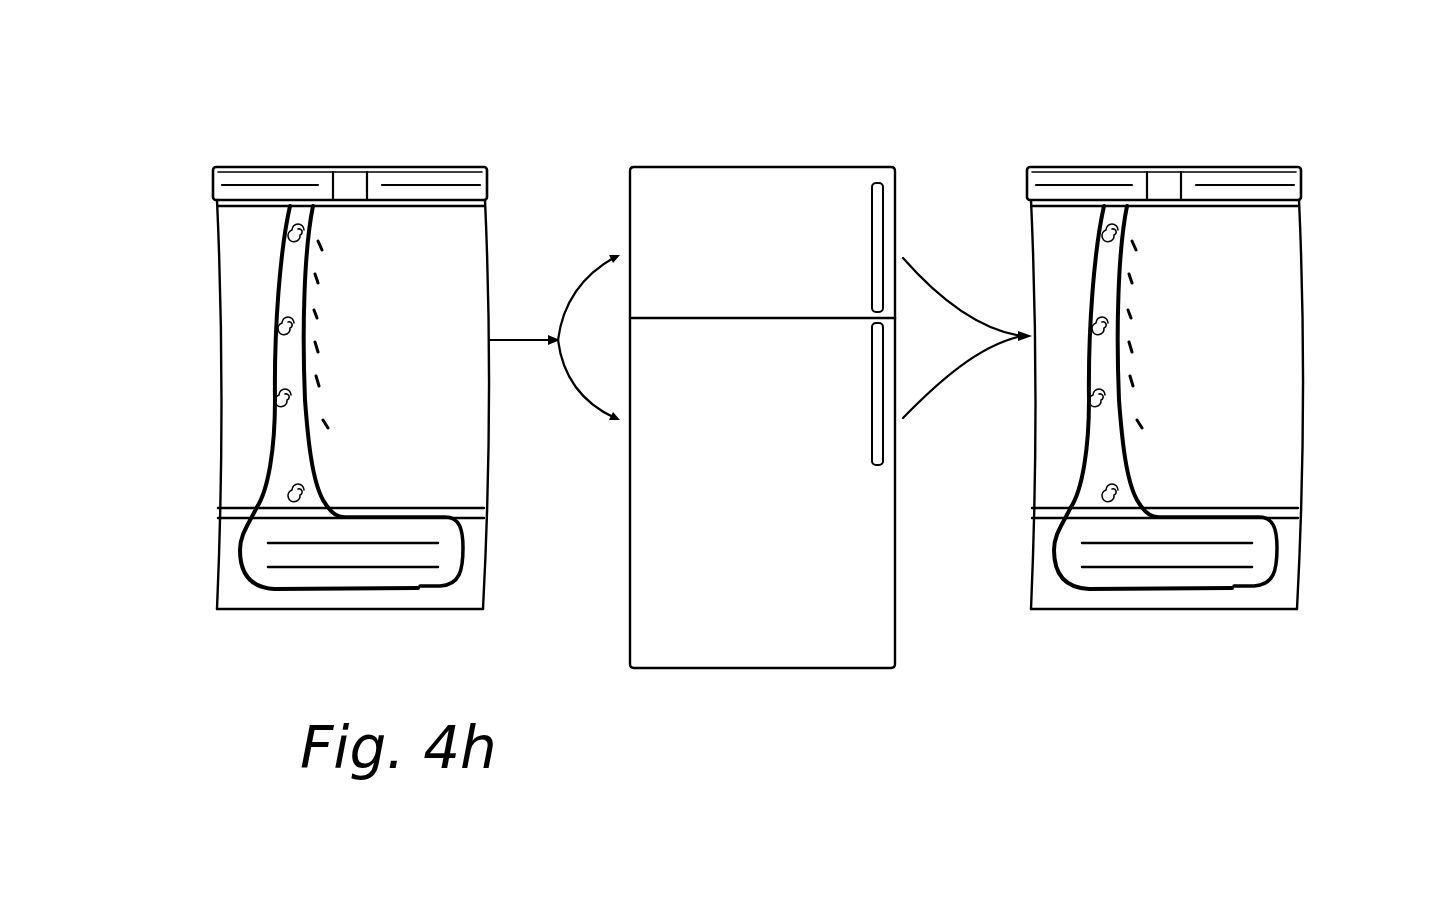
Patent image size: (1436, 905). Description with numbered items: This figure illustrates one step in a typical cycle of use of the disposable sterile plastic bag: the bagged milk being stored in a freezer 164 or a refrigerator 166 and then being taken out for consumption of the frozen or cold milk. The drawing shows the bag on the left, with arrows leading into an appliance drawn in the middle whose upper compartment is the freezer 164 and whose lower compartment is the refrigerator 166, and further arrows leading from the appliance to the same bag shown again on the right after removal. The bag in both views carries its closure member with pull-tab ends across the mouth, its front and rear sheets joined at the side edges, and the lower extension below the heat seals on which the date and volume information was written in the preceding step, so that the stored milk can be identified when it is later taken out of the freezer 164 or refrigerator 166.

The freezer 164 is at (770, 188).
The refrigerator 166 is at (865, 595).